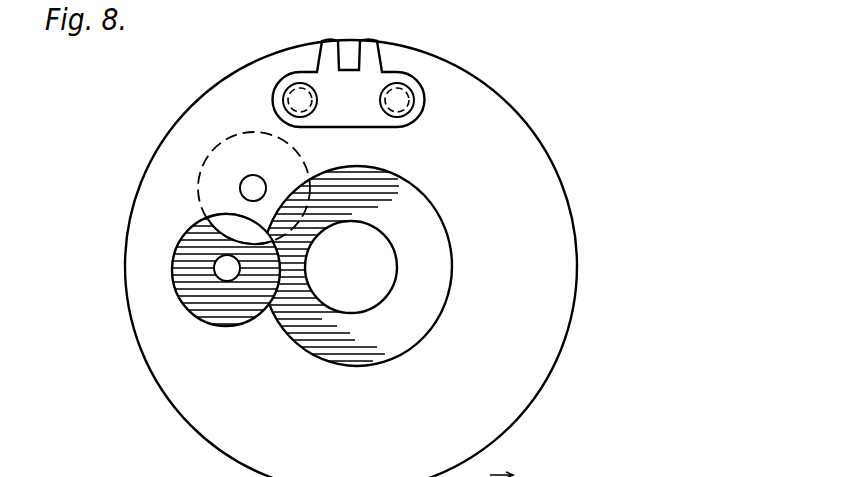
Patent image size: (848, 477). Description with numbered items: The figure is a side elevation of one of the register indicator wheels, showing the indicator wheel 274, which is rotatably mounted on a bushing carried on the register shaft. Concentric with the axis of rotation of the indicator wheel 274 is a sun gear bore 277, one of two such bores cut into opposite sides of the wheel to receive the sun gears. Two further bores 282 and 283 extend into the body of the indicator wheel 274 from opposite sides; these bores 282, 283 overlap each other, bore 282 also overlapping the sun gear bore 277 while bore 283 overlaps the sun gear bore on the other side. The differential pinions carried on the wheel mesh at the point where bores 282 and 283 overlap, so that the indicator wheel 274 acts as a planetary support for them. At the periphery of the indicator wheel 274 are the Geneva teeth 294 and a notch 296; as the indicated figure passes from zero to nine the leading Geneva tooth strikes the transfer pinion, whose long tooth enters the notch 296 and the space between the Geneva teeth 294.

The indicator wheel 274 is at (557, 358).
The sun gear bore 277 is at (438, 215).
The bore 282 is at (196, 197).
The bore 283 is at (197, 318).
The Geneva teeth 294 is at (388, 78).
The notch 296 is at (351, 46).